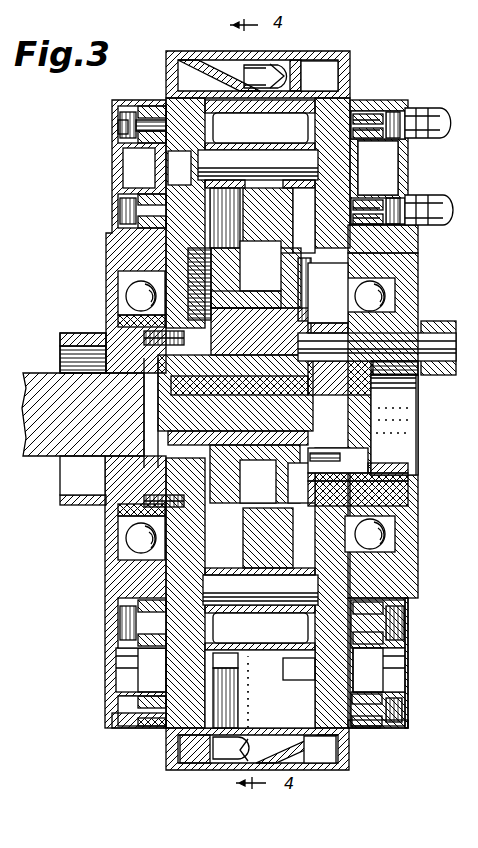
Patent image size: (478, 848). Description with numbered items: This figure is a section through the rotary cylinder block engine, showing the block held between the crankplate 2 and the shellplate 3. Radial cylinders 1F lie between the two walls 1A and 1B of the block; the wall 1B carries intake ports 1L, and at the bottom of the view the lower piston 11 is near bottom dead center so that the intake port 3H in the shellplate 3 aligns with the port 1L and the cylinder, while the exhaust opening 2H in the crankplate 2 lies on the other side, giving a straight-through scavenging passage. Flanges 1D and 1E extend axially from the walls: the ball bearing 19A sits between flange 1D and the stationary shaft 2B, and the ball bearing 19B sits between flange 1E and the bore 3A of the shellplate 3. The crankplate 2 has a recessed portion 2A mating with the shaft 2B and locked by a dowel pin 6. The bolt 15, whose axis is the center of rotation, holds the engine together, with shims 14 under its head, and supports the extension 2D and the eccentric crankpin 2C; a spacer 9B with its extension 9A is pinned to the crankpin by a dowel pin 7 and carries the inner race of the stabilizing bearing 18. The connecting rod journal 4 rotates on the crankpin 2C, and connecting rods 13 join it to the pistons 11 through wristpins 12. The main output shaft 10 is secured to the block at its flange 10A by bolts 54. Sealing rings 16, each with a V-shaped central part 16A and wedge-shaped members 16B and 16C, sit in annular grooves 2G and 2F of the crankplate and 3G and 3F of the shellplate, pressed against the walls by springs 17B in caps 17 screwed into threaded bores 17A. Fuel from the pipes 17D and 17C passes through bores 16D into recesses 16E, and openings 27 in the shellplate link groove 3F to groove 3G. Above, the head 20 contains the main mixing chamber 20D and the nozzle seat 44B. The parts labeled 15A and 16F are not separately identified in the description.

The wall 1A is at (338, 252).
The wall 1B is at (165, 720).
The flange 1D is at (382, 268).
The flange 1E is at (110, 310).
The cylinder 1F is at (260, 458).
The intake port 1L is at (226, 660).
The crankplate 2 is at (422, 410).
The recessed portion 2A is at (342, 488).
The stationary shaft 2B is at (372, 490).
The eccentric crankpin 2C is at (300, 332).
The extension 2D is at (205, 386).
The annular groove 2F is at (355, 720).
The annular groove 2G is at (379, 666).
The exhaust port 2H is at (398, 660).
The shellplate 3 is at (98, 585).
The bore 3A is at (110, 270).
The annular groove 3F is at (138, 720).
The annular groove 3G is at (145, 669).
The intake port 3H is at (112, 650).
The connecting rod journal 4 is at (222, 266).
The dowel pin 6 is at (330, 468).
The dowel pin 7 is at (249, 284).
The extension 9A is at (176, 414).
The spacer 9B is at (242, 274).
The main output shaft 10 is at (30, 367).
The flange 10A is at (105, 462).
The piston 11 is at (222, 120).
The wristpin 12 is at (258, 375).
The connecting rod 13 is at (260, 377).
The shim 14 is at (165, 384).
The bolt 15 is at (394, 418).
The hub flange 15A is at (150, 434).
The sealing ring 16 is at (346, 100).
The V-shaped central part 16A is at (128, 100).
The wedge-shaped member 16B is at (283, 168).
The wedge-shaped member 16C is at (372, 112).
The bore 16D is at (115, 116).
The circular recess 16E is at (320, 85).
The bolt shank 16F is at (148, 104).
The threaded cap 17 is at (118, 674).
The threaded bore 17A is at (118, 128).
The spring 17B is at (118, 120).
The fuel return line 17C is at (428, 200).
The inlet pipe 17D is at (432, 118).
The stabilizing bearing 18 is at (258, 481).
The ball bearing 19A is at (378, 526).
The ball bearing 19B is at (120, 532).
The head 20 is at (268, 54).
The main mixing chamber 20D is at (240, 57).
The opening 27 is at (142, 188).
The seat 44B is at (264, 76).
The bolt 54 is at (108, 327).